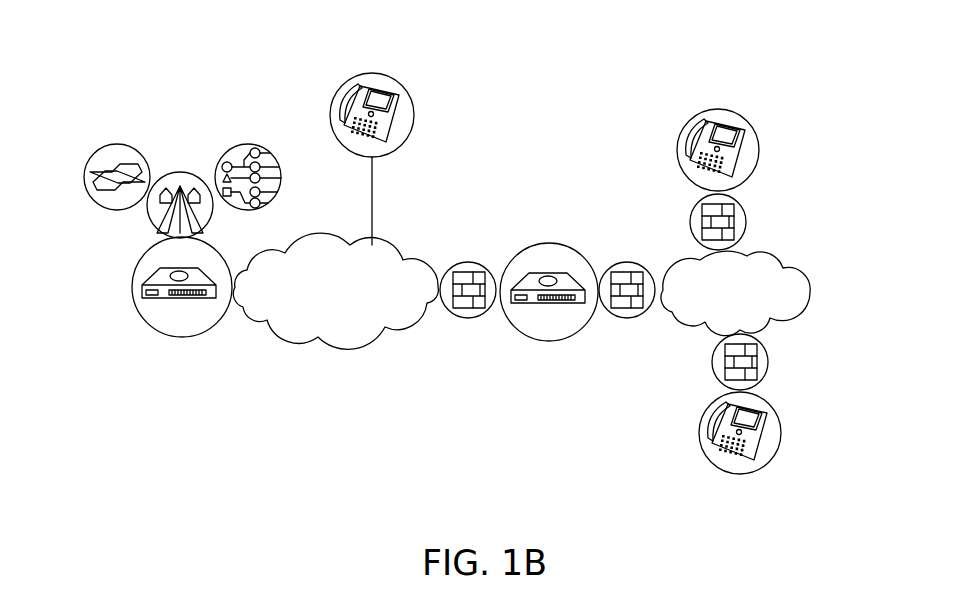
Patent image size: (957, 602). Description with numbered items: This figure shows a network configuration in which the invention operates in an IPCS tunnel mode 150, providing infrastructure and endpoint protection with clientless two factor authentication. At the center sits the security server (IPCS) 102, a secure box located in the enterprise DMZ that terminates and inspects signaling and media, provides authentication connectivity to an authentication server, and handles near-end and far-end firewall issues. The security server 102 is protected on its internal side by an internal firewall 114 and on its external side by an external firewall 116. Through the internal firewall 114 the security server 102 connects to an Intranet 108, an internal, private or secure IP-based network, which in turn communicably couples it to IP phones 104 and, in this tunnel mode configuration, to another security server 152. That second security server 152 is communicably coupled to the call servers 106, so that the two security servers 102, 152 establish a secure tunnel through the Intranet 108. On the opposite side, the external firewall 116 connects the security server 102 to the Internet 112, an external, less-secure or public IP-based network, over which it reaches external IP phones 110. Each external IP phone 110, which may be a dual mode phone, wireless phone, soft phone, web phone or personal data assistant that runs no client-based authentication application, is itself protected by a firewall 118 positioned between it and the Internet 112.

The tunnel mode 150 is at (537, 77).
The call servers 106 is at (270, 127).
The security server 152 is at (150, 263).
The Intranet 108 is at (312, 327).
The IP phones 104 is at (370, 82).
The internal firewall 114 is at (465, 270).
The security server 102 is at (553, 257).
The external firewall 116 is at (627, 268).
The Internet 112 is at (800, 290).
The external IP phones 110 is at (680, 137).
The firewall 118 is at (740, 223).